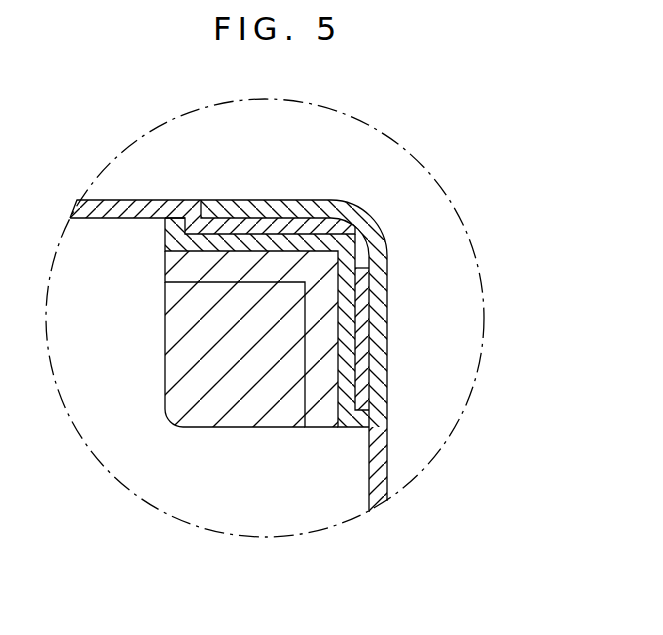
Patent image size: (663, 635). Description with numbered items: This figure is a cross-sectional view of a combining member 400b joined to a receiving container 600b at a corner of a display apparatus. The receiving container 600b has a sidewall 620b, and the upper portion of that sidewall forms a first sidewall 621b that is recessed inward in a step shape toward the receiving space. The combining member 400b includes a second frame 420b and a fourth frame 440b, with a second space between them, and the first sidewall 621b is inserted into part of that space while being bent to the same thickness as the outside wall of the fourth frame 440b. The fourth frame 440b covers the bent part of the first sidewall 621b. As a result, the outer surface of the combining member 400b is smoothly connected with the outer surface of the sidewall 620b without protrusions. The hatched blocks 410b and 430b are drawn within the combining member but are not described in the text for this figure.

The combining member 400b is at (393, 213).
The fourth frame 440b is at (379, 296).
The first sidewall 621b is at (363, 330).
The second frame 420b is at (350, 362).
The receiving container 600b is at (404, 434).
The sidewall 620b is at (380, 465).
The display panel 410b is at (238, 403).
The support frame 430b is at (320, 403).